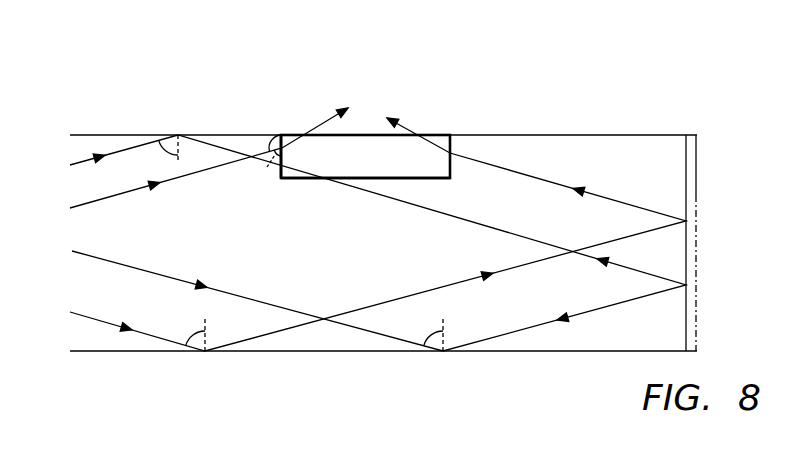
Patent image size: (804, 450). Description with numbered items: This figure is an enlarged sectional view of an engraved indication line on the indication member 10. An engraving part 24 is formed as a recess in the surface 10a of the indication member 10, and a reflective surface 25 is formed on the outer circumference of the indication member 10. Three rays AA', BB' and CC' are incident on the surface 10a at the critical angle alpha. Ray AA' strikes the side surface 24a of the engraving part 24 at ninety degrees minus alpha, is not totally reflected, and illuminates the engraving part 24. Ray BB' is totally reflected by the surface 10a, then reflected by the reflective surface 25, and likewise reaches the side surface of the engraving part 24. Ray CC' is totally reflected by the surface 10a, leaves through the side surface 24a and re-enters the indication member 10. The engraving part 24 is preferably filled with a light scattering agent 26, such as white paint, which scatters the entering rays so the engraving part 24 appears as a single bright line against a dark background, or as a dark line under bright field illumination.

The indication member 10 is at (578, 145).
The surface of indication member 10a is at (665, 136).
The reflective surface 25 is at (702, 143).
The engraving part 24 is at (282, 57).
The side surface of engraving part 24a is at (286, 133).
The light scattering agent 26 is at (366, 145).